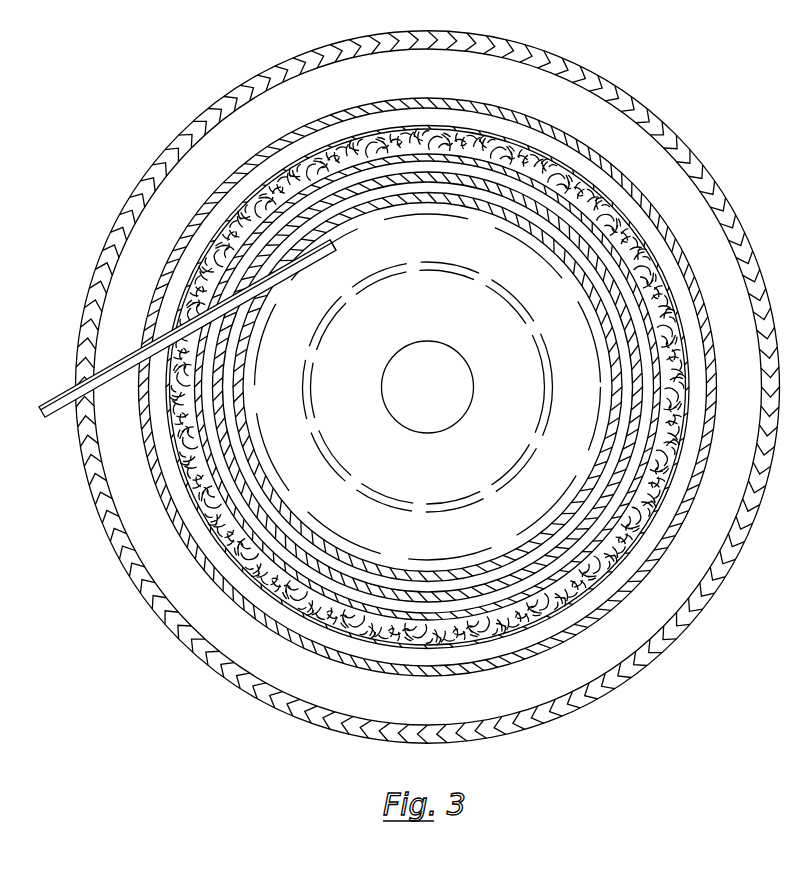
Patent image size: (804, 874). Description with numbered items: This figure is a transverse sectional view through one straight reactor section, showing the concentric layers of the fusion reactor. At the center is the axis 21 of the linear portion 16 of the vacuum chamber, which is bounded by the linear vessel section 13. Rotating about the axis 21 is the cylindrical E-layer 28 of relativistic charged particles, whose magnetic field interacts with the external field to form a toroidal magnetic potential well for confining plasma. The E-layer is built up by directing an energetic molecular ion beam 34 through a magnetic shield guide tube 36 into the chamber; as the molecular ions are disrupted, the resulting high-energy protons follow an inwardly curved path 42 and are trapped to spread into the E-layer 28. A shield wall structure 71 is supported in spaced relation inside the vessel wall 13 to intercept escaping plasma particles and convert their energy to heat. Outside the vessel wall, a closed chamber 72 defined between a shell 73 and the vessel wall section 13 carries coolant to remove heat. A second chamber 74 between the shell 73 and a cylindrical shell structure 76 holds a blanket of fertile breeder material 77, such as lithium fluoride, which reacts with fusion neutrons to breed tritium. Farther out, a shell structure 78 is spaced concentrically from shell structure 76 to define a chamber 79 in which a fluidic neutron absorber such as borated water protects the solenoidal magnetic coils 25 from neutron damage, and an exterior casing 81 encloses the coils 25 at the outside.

The linear vessel section 13 is at (278, 532).
The linear portion of vacuum chamber 16 is at (283, 381).
The axis 21 is at (438, 401).
The solenoidal magnetic coils 25 is at (342, 103).
The E-layer 28 is at (357, 474).
The molecular ion beam 34 is at (350, 232).
The magnetic shield guide tube 36 is at (58, 413).
The path 42 is at (486, 228).
The shield wall structure 71 is at (343, 554).
The closed chamber 72 is at (447, 607).
The shell 73 is at (230, 494).
The second chamber 74 is at (644, 257).
The cylindrical shell structure 76 is at (673, 469).
The fertile breeder material 77 is at (646, 291).
The neutron shield shell structure 78 is at (440, 100).
The neutron shield chamber 79 is at (556, 148).
The exterior casing 81 is at (496, 35).